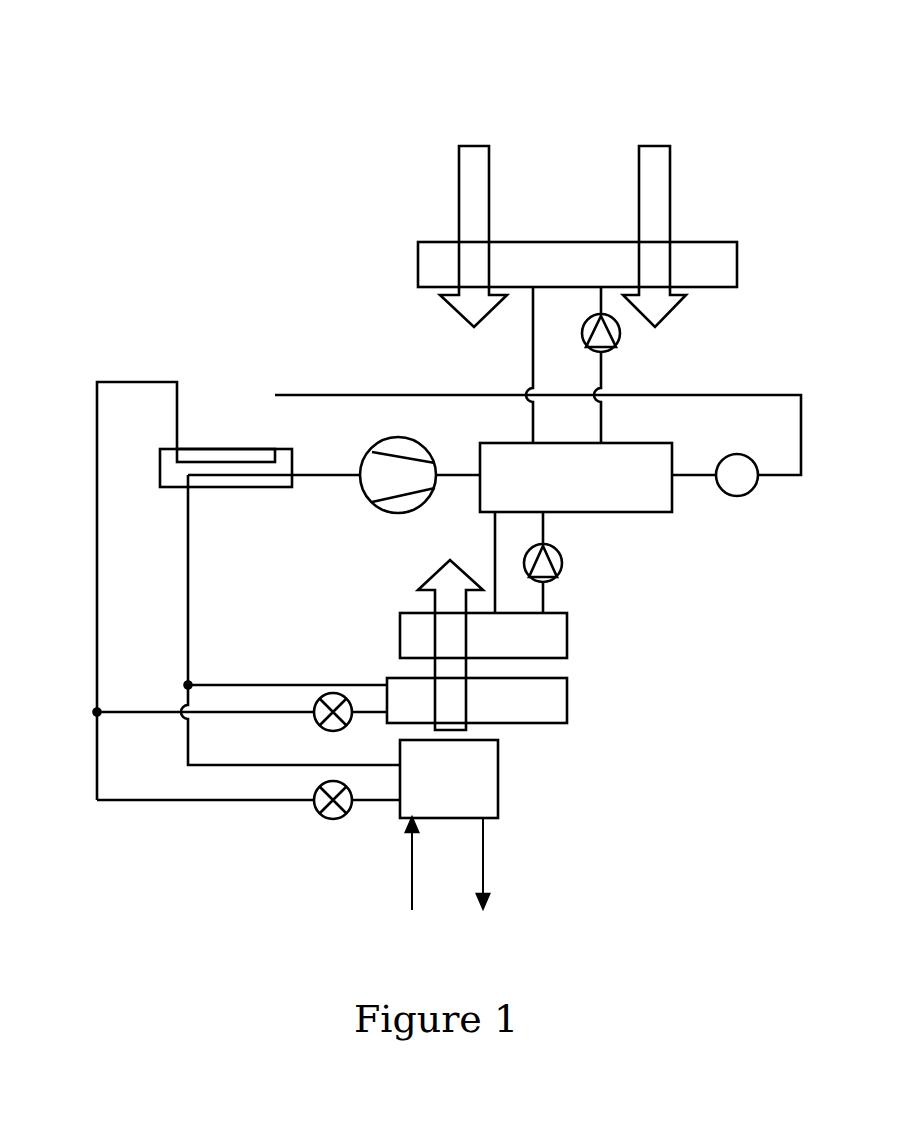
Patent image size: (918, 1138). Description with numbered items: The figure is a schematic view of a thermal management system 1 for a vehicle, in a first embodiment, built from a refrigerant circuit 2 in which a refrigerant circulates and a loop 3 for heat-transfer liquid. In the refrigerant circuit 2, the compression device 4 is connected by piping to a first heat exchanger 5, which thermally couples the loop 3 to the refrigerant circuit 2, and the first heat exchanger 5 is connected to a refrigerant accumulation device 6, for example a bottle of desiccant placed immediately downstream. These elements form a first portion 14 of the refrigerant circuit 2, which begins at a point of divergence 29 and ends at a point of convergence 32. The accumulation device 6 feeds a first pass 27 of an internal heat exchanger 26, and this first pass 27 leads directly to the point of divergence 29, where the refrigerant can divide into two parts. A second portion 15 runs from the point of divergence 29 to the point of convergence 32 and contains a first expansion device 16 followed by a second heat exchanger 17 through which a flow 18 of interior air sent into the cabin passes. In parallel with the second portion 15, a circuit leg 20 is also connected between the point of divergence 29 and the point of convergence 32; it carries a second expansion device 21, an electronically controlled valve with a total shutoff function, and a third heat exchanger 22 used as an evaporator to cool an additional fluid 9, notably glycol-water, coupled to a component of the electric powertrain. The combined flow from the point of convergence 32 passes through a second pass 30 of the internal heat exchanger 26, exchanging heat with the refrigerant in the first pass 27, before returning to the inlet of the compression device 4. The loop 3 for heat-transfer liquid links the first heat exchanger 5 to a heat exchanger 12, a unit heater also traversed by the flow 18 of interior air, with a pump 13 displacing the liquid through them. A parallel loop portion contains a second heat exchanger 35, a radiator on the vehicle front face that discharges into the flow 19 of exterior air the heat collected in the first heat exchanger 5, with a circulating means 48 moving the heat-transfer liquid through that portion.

The thermal management system 1 is at (277, 205).
The refrigerant circuit 2 is at (405, 375).
The loop for heat-transfer liquid 3 is at (523, 332).
The compression device 4 is at (378, 492).
The first heat exchanger 5 is at (632, 497).
The refrigerant accumulation device 6 is at (731, 484).
The additional fluid 9 is at (412, 860).
The heat exchanger 12 is at (413, 625).
The pump 13 is at (560, 572).
The first portion 14 is at (803, 395).
The second portion 15 is at (263, 672).
The first expansion device 16 is at (323, 728).
The second heat exchanger 17 is at (555, 700).
The flow of interior air 18 is at (451, 580).
The flow of exterior air 19 is at (473, 167).
The circuit leg 20 is at (205, 810).
The second expansion device 21 is at (325, 820).
The third heat exchanger 22 is at (487, 768).
The internal heat exchanger 26 is at (205, 447).
The first pass 27 is at (262, 460).
The point of divergence 29 is at (97, 712).
The second pass 30 is at (208, 480).
The point of convergence 32 is at (188, 685).
The second heat exchanger 35 is at (425, 268).
The circulating means 48 is at (608, 355).